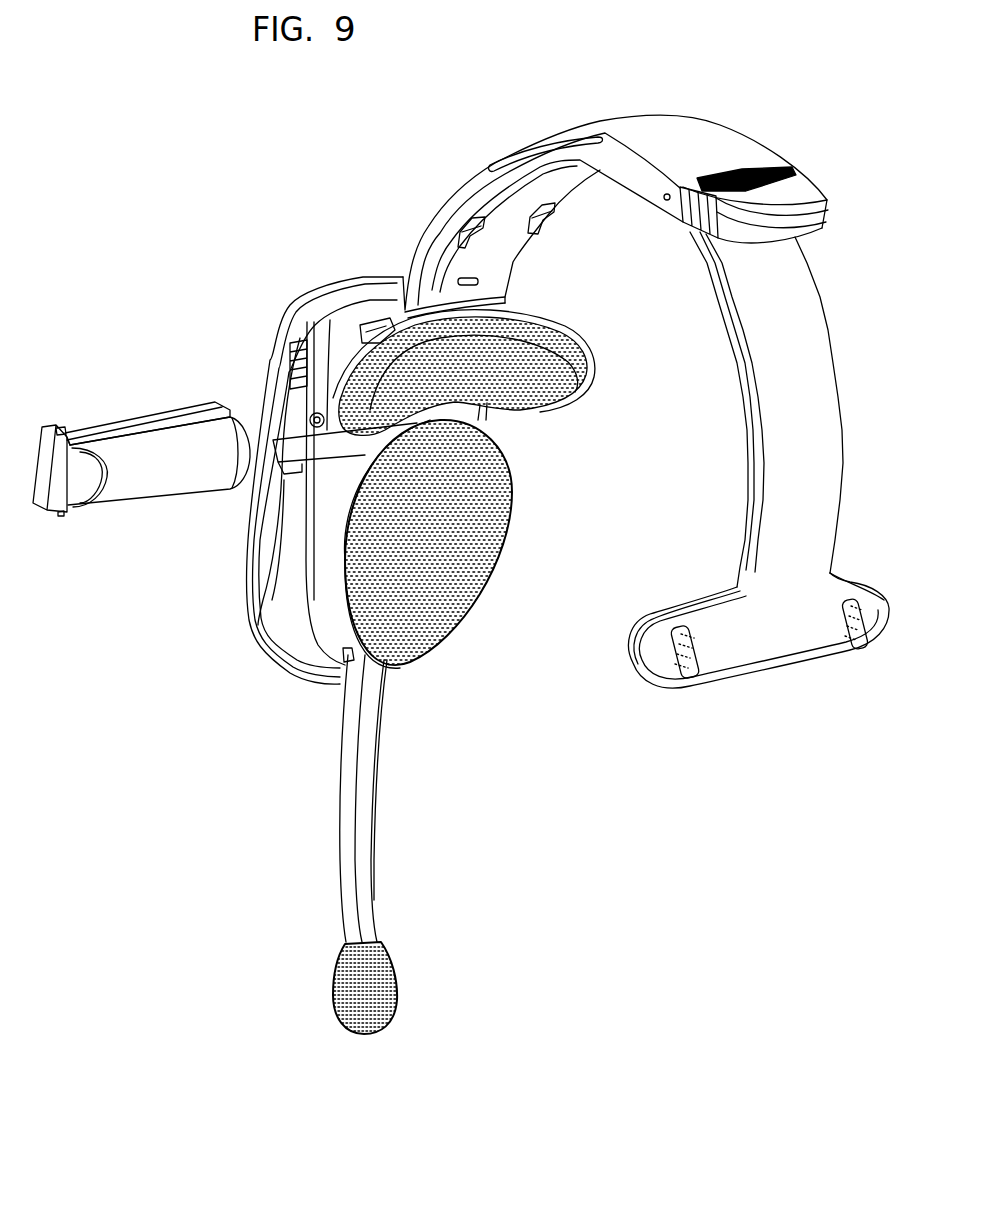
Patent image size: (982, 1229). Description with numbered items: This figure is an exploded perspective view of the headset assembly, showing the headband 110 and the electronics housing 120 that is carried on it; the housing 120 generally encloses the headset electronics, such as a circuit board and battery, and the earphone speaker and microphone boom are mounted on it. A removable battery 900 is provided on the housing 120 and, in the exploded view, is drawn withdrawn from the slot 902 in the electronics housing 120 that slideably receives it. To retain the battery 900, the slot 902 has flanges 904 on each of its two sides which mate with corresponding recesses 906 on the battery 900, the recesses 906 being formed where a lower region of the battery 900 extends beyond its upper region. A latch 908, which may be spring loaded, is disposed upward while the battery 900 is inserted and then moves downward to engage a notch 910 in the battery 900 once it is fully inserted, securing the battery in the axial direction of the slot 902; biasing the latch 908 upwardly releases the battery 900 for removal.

The headband 110 is at (738, 136).
The electronics housing 120 is at (296, 265).
The battery 900 is at (117, 492).
The slot 902 is at (302, 441).
The flanges 904 is at (295, 590).
The recesses 906 is at (228, 412).
The latch 908 is at (290, 353).
The notch 910 is at (58, 432).